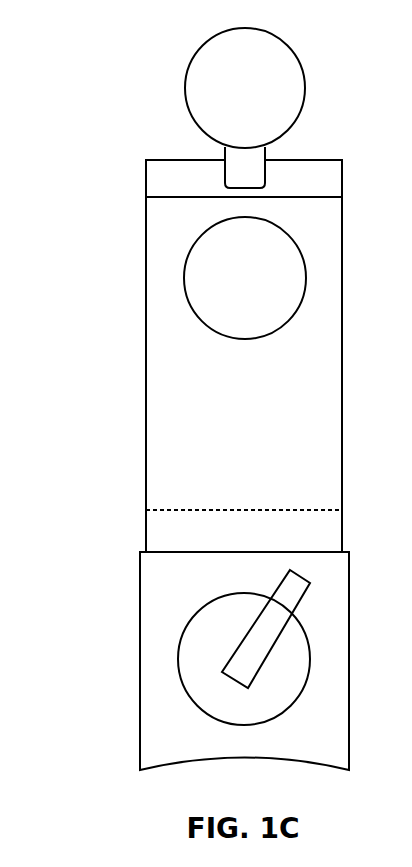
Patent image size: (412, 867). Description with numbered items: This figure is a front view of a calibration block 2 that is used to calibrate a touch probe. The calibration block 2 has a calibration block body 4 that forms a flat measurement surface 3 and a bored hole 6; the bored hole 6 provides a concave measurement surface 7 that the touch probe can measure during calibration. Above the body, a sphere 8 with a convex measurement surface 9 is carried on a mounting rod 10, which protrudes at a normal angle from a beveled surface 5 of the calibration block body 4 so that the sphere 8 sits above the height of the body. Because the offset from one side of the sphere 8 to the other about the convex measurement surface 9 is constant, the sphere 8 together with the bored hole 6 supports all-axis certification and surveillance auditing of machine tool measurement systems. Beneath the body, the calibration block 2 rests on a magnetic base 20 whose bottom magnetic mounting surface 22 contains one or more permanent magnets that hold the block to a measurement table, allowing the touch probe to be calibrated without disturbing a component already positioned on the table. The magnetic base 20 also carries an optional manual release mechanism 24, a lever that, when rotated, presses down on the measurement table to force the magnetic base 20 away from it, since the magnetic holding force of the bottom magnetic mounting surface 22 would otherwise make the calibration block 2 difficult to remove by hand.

The calibration block 2 is at (108, 128).
The flat measurement surface 3 is at (327, 422).
The calibration block body 4 is at (244, 374).
The beveled surface 5 is at (244, 178).
The bored hole 6 is at (245, 278).
The concave measurement surface 7 is at (206, 326).
The sphere 8 is at (245, 88).
The convex measurement surface 9 is at (298, 78).
The mounting rod 10 is at (245, 168).
The magnetic base 20 is at (244, 661).
The bottom magnetic mounting surface 22 is at (243, 758).
The manual release mechanism 24 is at (244, 647).